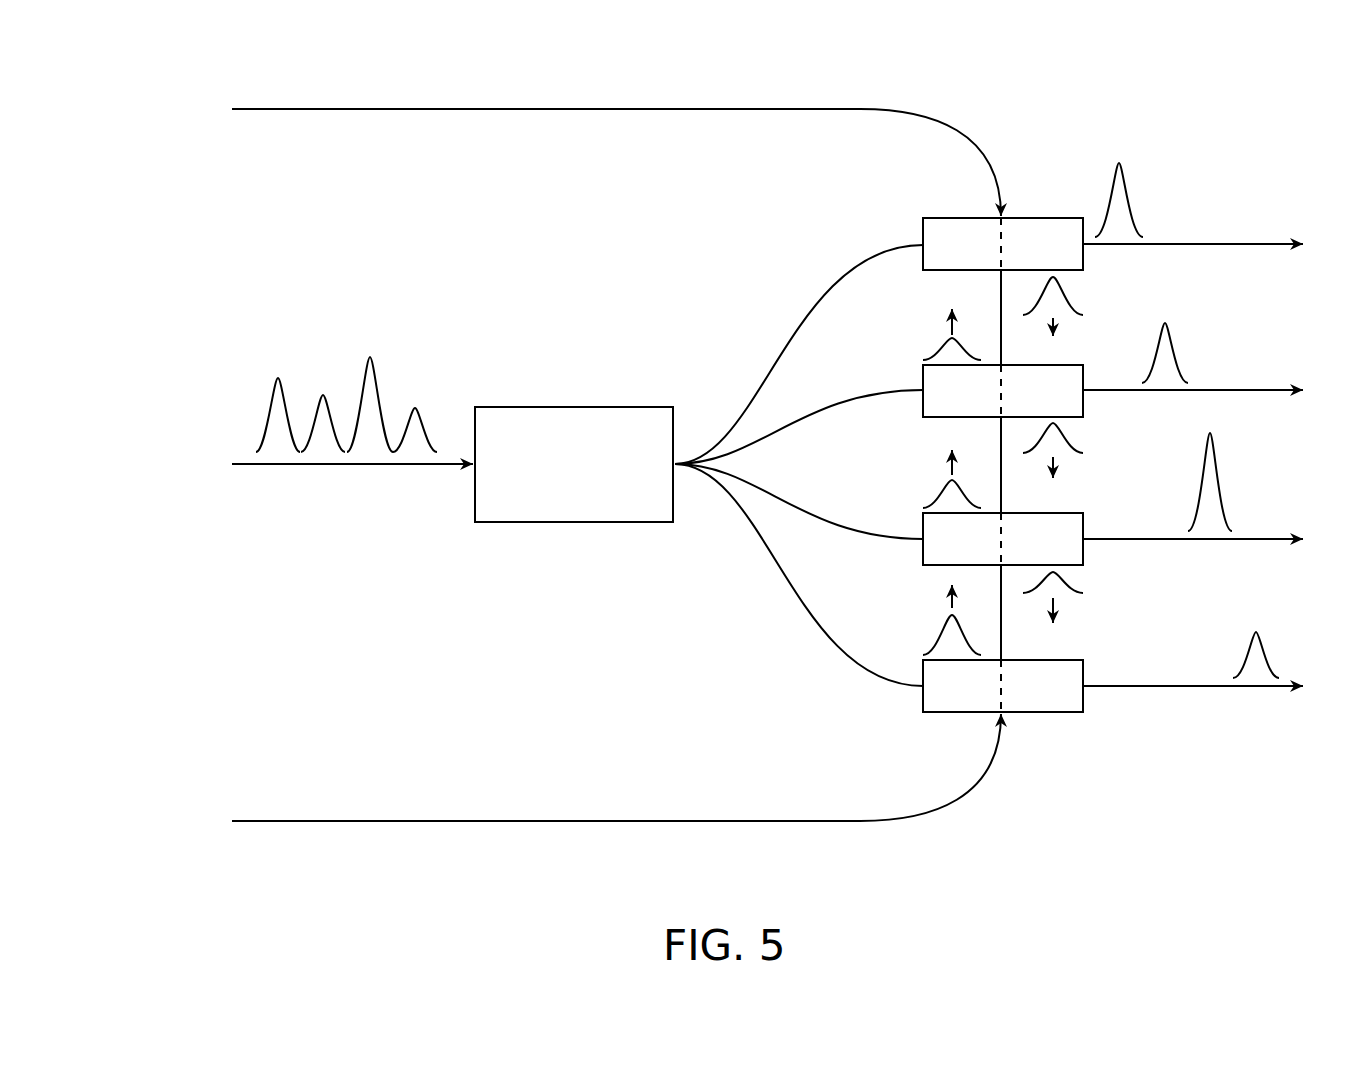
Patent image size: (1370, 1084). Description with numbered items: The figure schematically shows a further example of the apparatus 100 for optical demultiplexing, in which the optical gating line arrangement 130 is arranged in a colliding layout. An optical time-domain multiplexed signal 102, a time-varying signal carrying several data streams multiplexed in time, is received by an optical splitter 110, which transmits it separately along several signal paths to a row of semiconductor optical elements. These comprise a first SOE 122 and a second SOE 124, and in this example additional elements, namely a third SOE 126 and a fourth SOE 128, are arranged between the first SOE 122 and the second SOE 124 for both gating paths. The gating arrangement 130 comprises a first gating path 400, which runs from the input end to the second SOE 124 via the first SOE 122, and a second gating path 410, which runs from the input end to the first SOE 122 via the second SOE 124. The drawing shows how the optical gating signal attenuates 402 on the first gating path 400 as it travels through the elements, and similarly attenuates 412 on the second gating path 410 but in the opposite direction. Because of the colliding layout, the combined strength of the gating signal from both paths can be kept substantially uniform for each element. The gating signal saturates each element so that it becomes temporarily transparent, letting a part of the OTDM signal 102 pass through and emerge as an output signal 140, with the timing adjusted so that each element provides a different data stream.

The apparatus 100 is at (1268, 109).
The optical time-domain multiplexed signal 102 is at (246, 402).
The optical splitter 110 is at (550, 398).
The first SOE 122 is at (1070, 740).
The second SOE 124 is at (1056, 198).
The third SOE 126 is at (1087, 572).
The fourth SOE 128 is at (1084, 430).
The optical gating line arrangement 130 is at (594, 520).
The output signal 140 is at (1162, 207).
The first gating path 400 is at (390, 837).
The attenuation of the optical gating signal on the first gating path 402 is at (906, 354).
The second gating path 410 is at (778, 134).
The attenuation of the optical gating signal on the second gating path 412 is at (1135, 292).